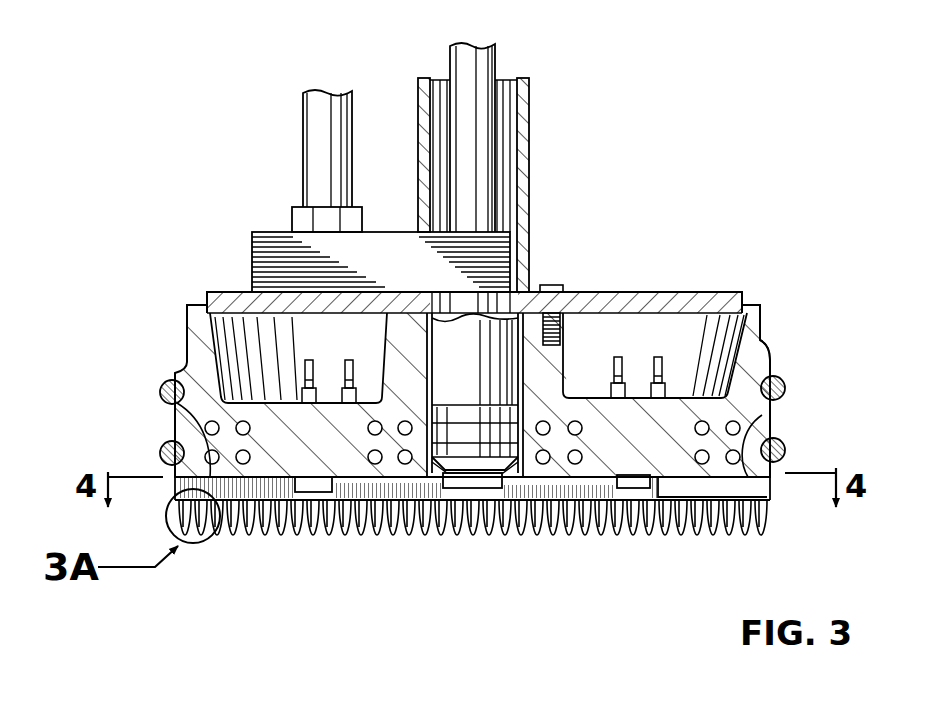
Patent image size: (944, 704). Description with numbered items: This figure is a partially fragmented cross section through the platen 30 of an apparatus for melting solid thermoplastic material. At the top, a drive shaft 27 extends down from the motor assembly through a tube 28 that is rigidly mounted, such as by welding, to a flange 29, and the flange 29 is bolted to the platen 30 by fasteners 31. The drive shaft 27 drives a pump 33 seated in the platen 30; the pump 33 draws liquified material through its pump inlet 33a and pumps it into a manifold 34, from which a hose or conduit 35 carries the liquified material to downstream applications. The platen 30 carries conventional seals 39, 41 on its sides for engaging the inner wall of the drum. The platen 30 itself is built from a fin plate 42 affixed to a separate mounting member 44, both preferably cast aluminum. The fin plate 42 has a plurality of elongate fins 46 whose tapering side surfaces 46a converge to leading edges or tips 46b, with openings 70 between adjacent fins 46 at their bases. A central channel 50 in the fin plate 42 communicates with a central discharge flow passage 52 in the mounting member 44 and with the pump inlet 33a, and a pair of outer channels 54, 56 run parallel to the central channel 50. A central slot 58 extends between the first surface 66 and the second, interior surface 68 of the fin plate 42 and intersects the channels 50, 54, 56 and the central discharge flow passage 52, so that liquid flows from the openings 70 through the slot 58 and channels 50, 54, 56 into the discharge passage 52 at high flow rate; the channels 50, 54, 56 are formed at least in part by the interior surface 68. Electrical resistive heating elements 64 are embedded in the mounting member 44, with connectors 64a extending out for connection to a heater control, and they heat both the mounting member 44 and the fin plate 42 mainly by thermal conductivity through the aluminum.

The drive shaft 27 is at (468, 44).
The tube 28 is at (530, 80).
The flange 29 is at (627, 292).
The platen 30 is at (768, 290).
The fasteners 31 is at (556, 290).
The pump 33 is at (464, 356).
The pump inlet 33a is at (450, 478).
The manifold 34 is at (252, 243).
The hose or conduit 35 is at (338, 92).
The seal 39 is at (787, 385).
The seal 41 is at (787, 452).
The fin plate 42 is at (518, 540).
The mounting member 44 is at (775, 358).
The fins 46 is at (680, 537).
The tapering side surfaces 46a is at (243, 535).
The leading edges or tips 46b is at (403, 533).
The central channel 50 is at (483, 490).
The central discharge flow passage 52 is at (514, 473).
The outer channel 54 is at (327, 537).
The outer channel 56 is at (653, 537).
The central slot 58 is at (178, 436).
The heating elements 64 is at (200, 427).
The connectors 64a is at (349, 360).
The first surface 66 is at (768, 487).
The second, interior surface 68 is at (778, 427).
The openings 70 is at (595, 537).